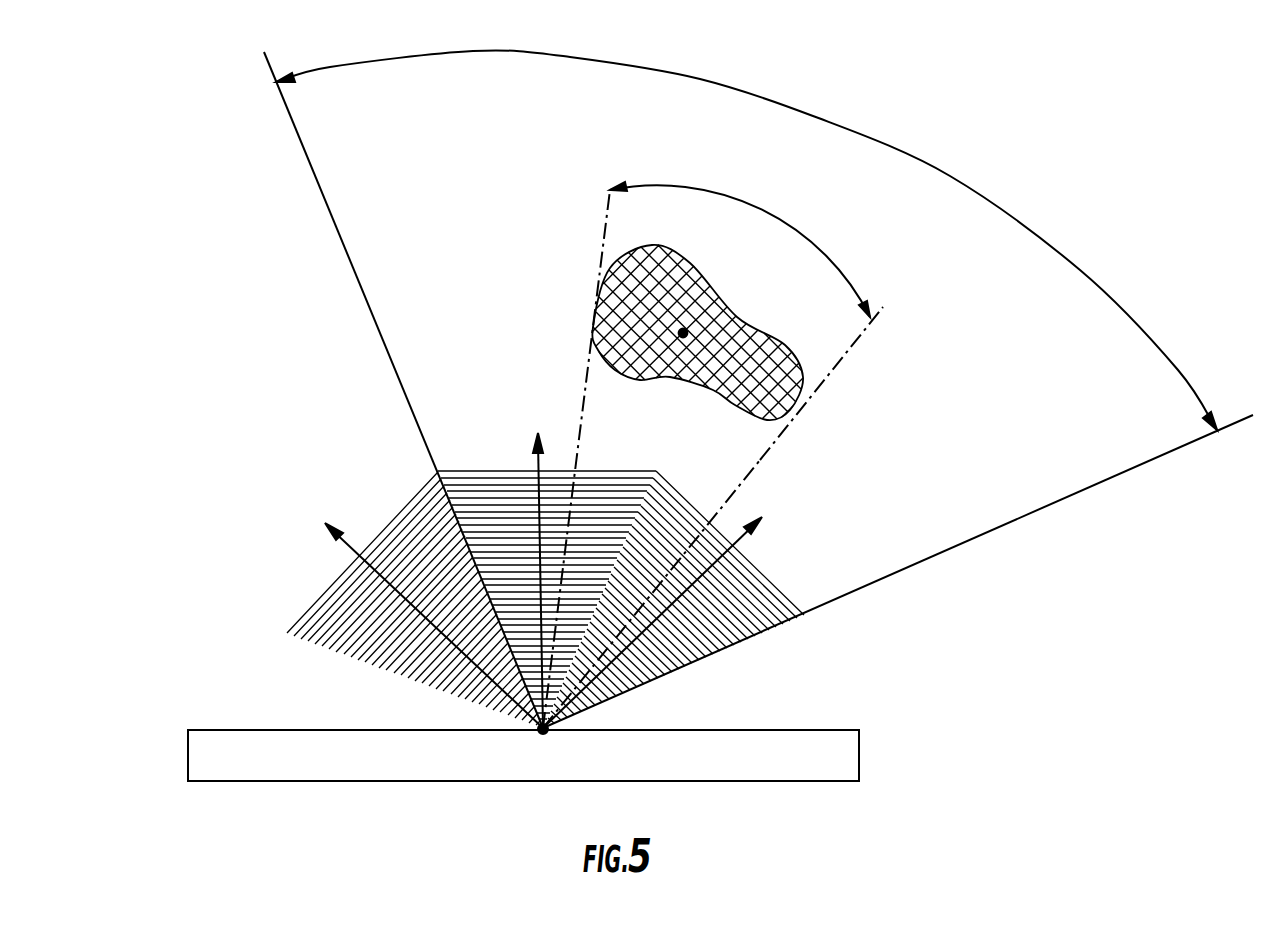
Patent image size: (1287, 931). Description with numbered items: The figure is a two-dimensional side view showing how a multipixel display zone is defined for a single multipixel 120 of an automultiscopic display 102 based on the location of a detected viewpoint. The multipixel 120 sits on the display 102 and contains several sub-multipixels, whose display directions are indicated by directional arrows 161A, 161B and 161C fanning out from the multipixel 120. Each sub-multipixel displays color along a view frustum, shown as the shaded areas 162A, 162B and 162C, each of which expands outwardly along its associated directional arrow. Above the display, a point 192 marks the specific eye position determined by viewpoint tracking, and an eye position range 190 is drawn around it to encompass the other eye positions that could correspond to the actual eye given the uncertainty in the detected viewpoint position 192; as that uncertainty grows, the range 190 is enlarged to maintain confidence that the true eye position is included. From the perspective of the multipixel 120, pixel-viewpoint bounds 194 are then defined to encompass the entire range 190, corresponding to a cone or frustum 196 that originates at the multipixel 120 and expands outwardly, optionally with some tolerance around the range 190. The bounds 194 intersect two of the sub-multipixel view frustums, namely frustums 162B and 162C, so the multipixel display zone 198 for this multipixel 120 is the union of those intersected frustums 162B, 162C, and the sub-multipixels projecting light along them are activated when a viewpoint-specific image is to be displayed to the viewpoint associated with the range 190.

The automultiscopic display 102 is at (184, 752).
The multipixel 120 is at (541, 735).
The directional arrow 161A is at (353, 549).
The directional arrow 161B is at (537, 467).
The directional arrow 161C is at (743, 538).
The view frustum 162A is at (330, 605).
The view frustum 162B is at (500, 487).
The view frustum 162C is at (748, 630).
The eye position range 190 is at (810, 358).
The detected viewpoint position 192 is at (687, 330).
The pixel-viewpoint bounds 194 is at (790, 223).
The cone or frustum 196 is at (790, 428).
The multipixel display zone 198 is at (814, 117).